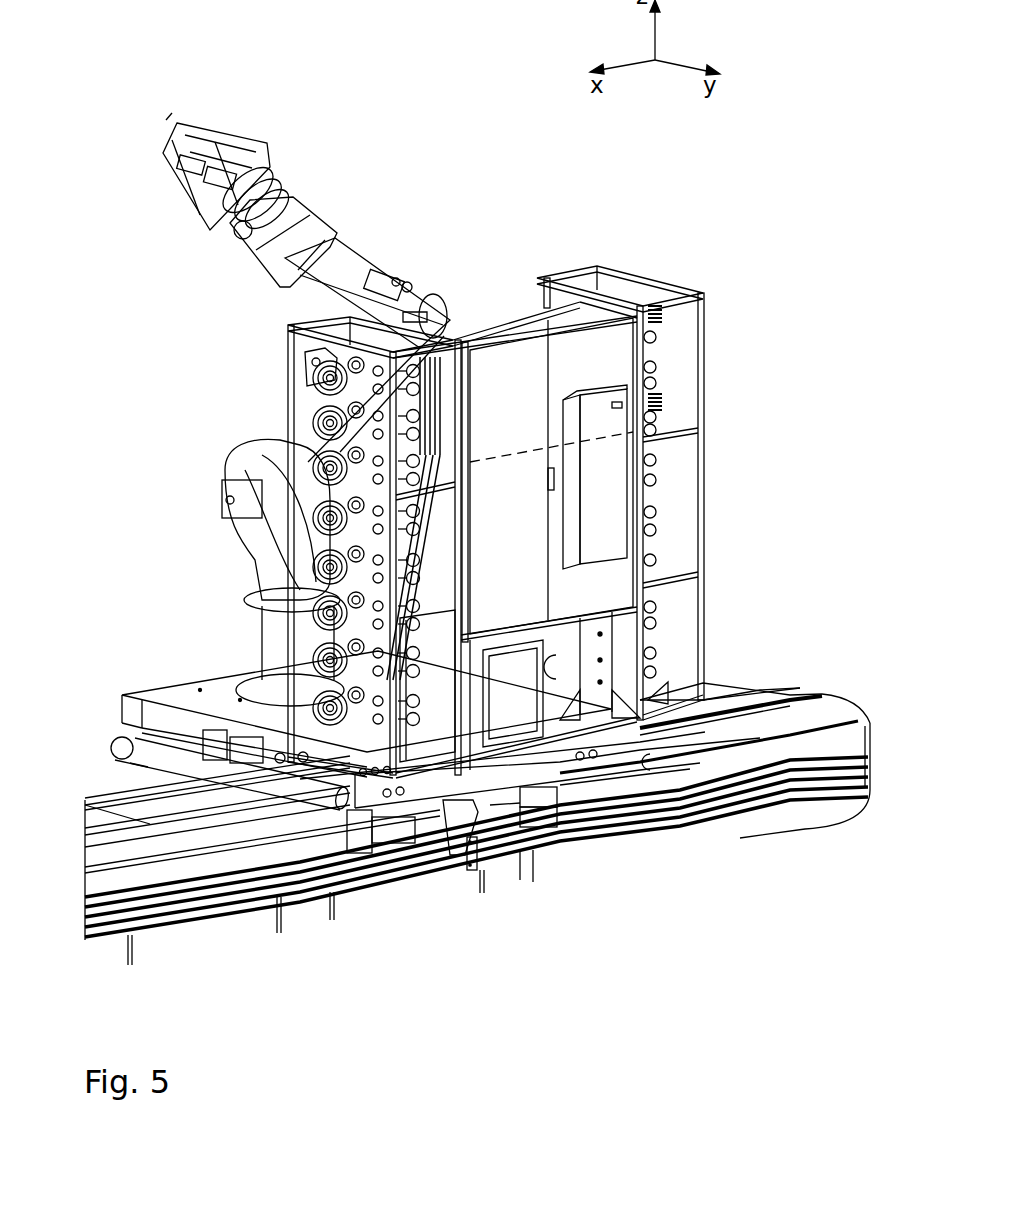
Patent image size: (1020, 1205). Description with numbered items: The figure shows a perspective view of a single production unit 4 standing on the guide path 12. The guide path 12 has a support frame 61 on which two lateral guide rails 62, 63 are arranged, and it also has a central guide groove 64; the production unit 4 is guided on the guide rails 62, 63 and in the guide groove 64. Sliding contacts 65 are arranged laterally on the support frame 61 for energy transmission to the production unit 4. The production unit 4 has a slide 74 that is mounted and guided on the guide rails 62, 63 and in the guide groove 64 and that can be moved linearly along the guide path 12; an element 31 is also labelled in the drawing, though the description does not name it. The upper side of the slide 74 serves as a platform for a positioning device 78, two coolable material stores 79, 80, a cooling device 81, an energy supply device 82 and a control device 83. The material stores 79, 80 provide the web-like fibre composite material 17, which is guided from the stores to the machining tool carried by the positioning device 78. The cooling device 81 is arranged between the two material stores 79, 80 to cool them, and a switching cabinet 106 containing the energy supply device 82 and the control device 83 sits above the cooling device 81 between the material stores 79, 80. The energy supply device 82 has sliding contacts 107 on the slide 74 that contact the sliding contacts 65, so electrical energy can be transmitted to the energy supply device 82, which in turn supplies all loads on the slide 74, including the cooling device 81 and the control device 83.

The production unit 4 is at (482, 168).
The guide path 12 is at (88, 785).
The fibre composite material 17 is at (417, 396).
The carriage 31 is at (795, 682).
The support frame 61 is at (752, 765).
The guide rail 62 is at (153, 787).
The guide rail 63 is at (201, 854).
The guide groove 64 is at (743, 740).
The sliding contacts 65 is at (290, 884).
The slide 74 is at (130, 708).
The positioning device 78 is at (345, 210).
The coolable material store 79 is at (275, 375).
The coolable material store 80 is at (583, 258).
The cooling device 81 is at (528, 740).
The energy supply device 82 is at (612, 588).
The control device 83 is at (523, 362).
The switching cabinet 106 is at (481, 343).
The sliding contacts 107 is at (440, 870).